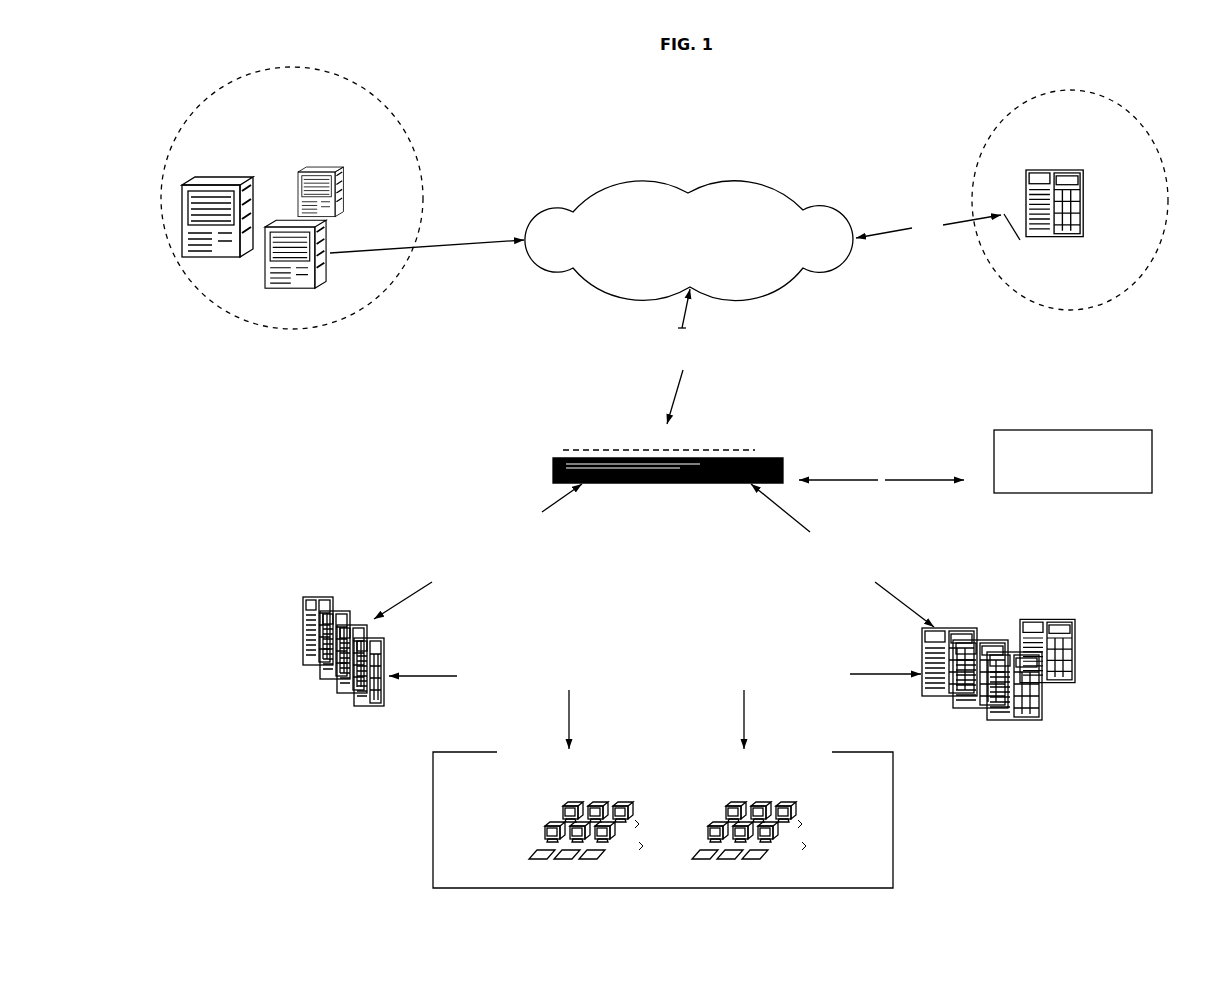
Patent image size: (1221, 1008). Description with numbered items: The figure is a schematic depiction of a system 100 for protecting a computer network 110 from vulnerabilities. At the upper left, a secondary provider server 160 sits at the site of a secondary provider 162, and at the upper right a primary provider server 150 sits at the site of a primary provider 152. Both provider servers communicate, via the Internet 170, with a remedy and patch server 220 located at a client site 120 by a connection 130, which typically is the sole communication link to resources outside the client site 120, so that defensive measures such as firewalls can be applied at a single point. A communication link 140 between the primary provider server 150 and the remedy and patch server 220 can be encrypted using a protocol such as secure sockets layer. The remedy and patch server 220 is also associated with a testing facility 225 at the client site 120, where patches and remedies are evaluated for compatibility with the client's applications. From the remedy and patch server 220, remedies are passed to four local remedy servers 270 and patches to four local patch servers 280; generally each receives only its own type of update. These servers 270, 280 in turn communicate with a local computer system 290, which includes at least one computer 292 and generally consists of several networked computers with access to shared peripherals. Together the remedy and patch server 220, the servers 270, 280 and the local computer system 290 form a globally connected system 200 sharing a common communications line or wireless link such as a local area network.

The system 100 is at (689, 459).
The computer network 110 is at (278, 398).
The client site 120 is at (1120, 387).
The connection 130 is at (714, 323).
The communication link 140 is at (981, 236).
The primary provider server 150 is at (1094, 203).
The primary provider 152 is at (1128, 112).
The secondary provider server 160 is at (301, 224).
The secondary provider 162 is at (412, 142).
The Internet 170 is at (689, 241).
The globally connected system 200 is at (266, 459).
The remedy and patch server 220 is at (881, 469).
The testing facility 225 is at (1073, 461).
The local remedy server 270 is at (1023, 669).
The local patch server 280 is at (290, 640).
The local computer system 290 is at (663, 820).
The computer 292 is at (812, 818).